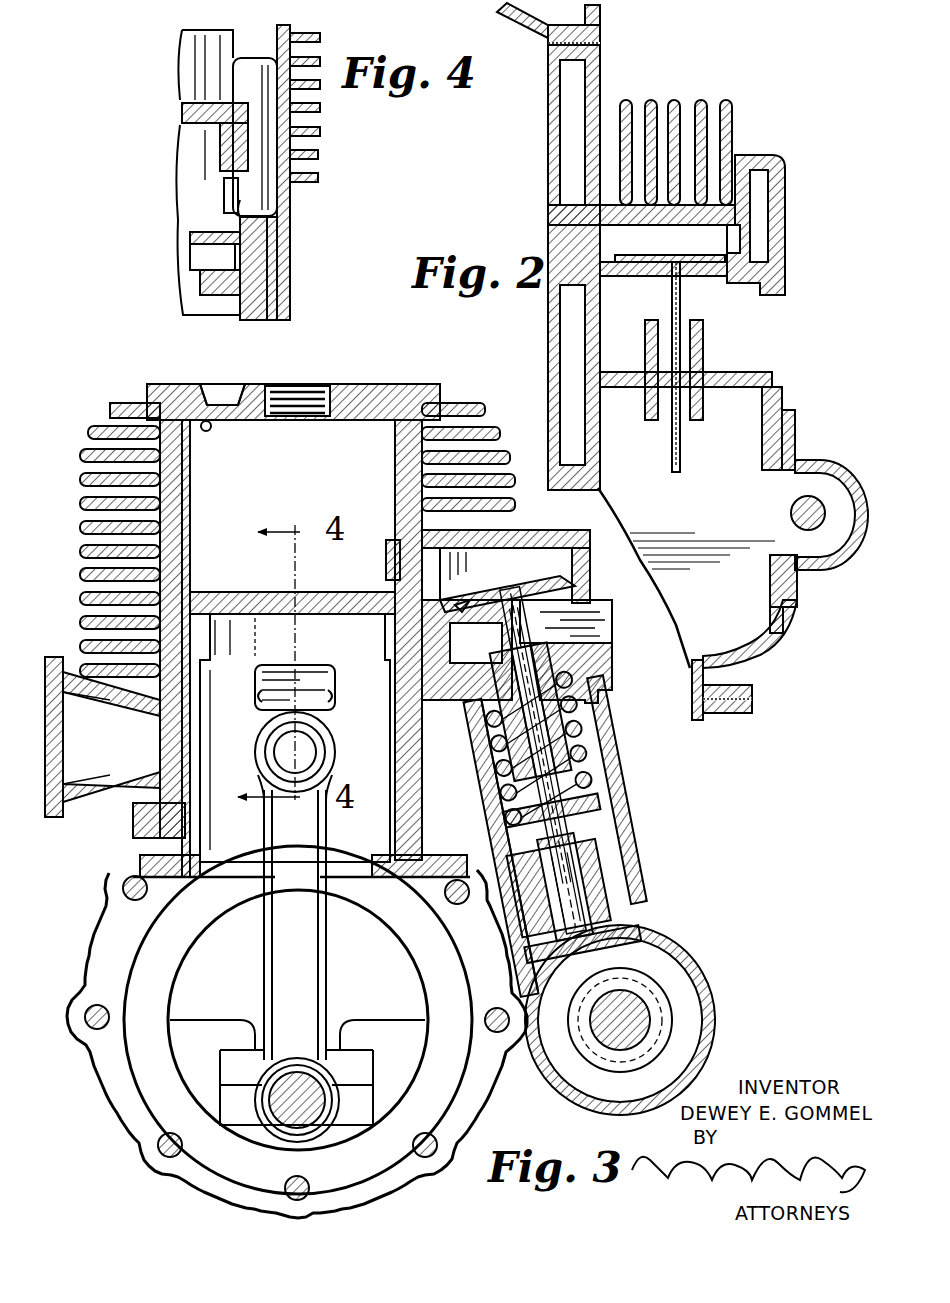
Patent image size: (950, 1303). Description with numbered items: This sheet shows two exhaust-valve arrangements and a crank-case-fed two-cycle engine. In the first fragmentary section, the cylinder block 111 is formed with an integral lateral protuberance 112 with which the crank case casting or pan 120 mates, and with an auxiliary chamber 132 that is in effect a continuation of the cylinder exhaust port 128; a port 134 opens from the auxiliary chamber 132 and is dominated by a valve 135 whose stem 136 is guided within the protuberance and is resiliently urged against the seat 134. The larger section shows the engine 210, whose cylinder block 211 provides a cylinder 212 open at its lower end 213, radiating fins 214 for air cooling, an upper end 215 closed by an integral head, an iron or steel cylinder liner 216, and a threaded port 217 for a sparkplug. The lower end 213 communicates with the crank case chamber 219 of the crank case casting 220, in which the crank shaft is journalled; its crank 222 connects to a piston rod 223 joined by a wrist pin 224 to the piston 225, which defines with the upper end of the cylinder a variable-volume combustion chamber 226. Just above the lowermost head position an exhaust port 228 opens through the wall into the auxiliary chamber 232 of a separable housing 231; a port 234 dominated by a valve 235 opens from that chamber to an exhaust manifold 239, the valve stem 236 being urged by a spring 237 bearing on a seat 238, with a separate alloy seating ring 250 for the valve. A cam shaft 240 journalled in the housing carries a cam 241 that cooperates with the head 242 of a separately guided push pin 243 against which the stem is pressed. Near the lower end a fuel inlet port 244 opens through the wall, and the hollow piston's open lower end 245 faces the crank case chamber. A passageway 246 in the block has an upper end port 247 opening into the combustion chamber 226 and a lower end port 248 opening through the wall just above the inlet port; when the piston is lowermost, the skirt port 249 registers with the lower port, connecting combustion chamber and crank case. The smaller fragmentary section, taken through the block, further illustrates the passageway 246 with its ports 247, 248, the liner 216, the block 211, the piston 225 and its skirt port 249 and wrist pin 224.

In FIG. 2, the cylinder block 111 is at (590, 66).
In FIG. 2, the lateral protuberance 112 is at (786, 184).
In FIG. 2, the crank case casting 120 is at (728, 713).
In FIG. 2, the cylinder exhaust port 128 is at (548, 240).
In FIG. 2, the auxiliary chamber 132 is at (745, 235).
In FIG. 2, the port 134 is at (648, 270).
In FIG. 2, the valve 135 is at (700, 258).
In FIG. 2, the valve stem 136 is at (678, 306).
In FIG. 3, the engine 210 is at (400, 380).
In FIG. 3, the cylinder block 211 is at (165, 410).
In FIG. 4, the cylinder block 211 is at (272, 287).
In FIG. 3, the cylinder 212 is at (160, 543).
In FIG. 3, the lower open end 213 is at (398, 878).
In FIG. 3, the radiating fins 214 is at (92, 456).
In FIG. 3, the upper end of the cylinder 215 is at (205, 408).
In FIG. 3, the cylinder liner 216 is at (182, 497).
In FIG. 4, the cylinder liner 216 is at (262, 257).
In FIG. 3, the threaded port 217 is at (298, 386).
In FIG. 3, the crank case chamber 219 is at (172, 963).
In FIG. 3, the crank case casting 220 is at (108, 944).
In FIG. 3, the crank 222 is at (287, 1108).
In FIG. 3, the piston rod 223 is at (302, 935).
In FIG. 3, the wrist pin 224 is at (318, 742).
In FIG. 4, the wrist pin 224 is at (208, 277).
In FIG. 3, the piston 225 is at (350, 602).
In FIG. 4, the piston 225 is at (182, 113).
In FIG. 3, the combustion chamber 226 is at (318, 481).
In FIG. 3, the exhaust port 228 is at (392, 556).
In FIG. 3, the separable housing 231 is at (612, 775).
In FIG. 3, the auxiliary chamber 232 is at (508, 571).
In FIG. 3, the port 234 is at (448, 620).
In FIG. 3, the valve 235 is at (548, 578).
In FIG. 3, the valve stem 236 is at (522, 632).
In FIG. 3, the spring 237 is at (590, 760).
In FIG. 3, the seat 238 is at (600, 828).
In FIG. 3, the exhaust manifold 239 is at (604, 655).
In FIG. 3, the cam shaft 240 is at (618, 1032).
In FIG. 3, the cam 241 is at (668, 1003).
In FIG. 3, the head of push pin 242 is at (640, 962).
In FIG. 3, the push pin 243 is at (590, 912).
In FIG. 3, the fuel inlet port 244 is at (160, 760).
In FIG. 3, the lower end of piston 245 is at (230, 870).
In FIG. 3, the passageway 246 is at (330, 650).
In FIG. 4, the passageway 246 is at (268, 142).
In FIG. 3, the upper end port 247 is at (260, 572).
In FIG. 4, the upper end port 247 is at (233, 83).
In FIG. 3, the lower end port 248 is at (330, 697).
In FIG. 4, the lower end port 248 is at (238, 200).
In FIG. 3, the piston skirt port 249 is at (262, 700).
In FIG. 4, the piston skirt port 249 is at (226, 192).
In FIG. 3, the alloy seating ring 250 is at (457, 606).